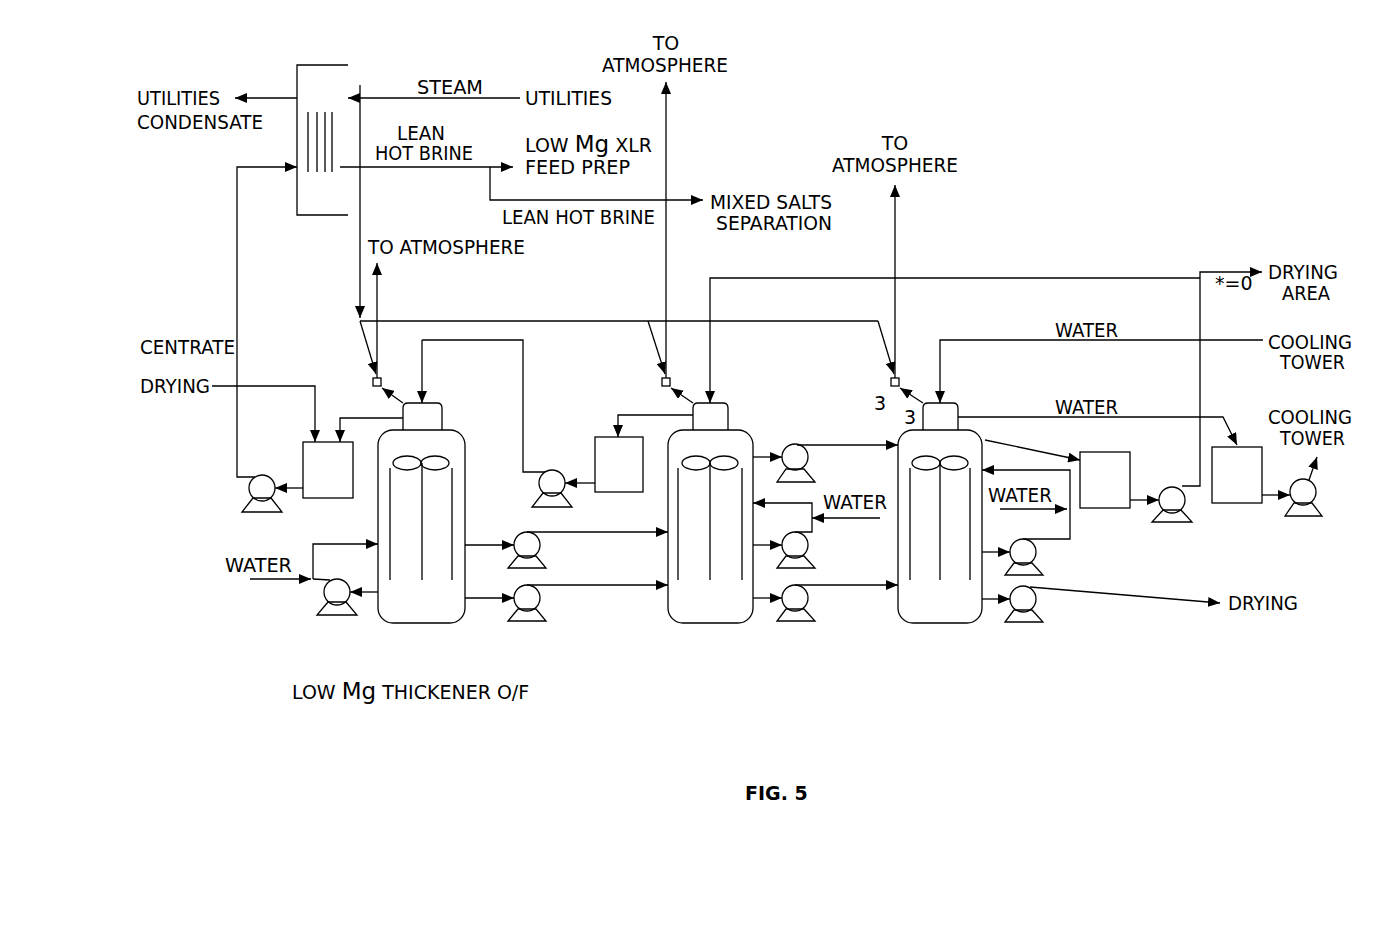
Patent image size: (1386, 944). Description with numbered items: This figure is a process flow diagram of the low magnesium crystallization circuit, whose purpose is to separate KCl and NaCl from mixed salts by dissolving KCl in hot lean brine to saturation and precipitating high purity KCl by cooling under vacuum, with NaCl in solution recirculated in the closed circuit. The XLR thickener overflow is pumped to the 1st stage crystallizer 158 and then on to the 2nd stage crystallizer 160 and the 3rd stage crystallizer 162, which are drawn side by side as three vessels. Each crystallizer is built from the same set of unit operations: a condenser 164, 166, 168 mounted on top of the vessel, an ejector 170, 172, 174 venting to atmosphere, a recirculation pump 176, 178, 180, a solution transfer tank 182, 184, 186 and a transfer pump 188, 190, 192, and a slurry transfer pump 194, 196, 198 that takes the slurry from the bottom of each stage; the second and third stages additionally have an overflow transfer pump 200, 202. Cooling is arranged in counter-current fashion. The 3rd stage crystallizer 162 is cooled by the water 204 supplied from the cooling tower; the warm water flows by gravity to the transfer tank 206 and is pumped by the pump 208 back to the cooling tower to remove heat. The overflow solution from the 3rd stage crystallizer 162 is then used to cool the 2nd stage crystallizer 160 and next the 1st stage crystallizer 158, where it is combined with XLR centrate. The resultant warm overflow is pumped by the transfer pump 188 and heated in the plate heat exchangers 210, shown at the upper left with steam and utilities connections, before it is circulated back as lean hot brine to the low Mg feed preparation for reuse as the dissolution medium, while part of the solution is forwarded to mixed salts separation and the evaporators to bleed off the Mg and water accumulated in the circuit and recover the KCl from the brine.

The 1st stage crystallizer 158 is at (404, 618).
The 2nd stage crystallizer 160 is at (693, 618).
The 3rd stage crystallizer 162 is at (922, 618).
The condenser 164 is at (428, 418).
The condenser 166 is at (722, 417).
The condenser 168 is at (950, 418).
The ejector 170 is at (372, 380).
The ejector 172 is at (661, 378).
The ejector 174 is at (890, 378).
The recirculation pump 176 is at (323, 582).
The recirculation pump 178 is at (808, 548).
The recirculation pump 180 is at (1037, 553).
The solution transfer tank 182 is at (310, 481).
The solution transfer tank 184 is at (601, 476).
The solution transfer tank 186 is at (1087, 491).
The transfer pump 188 is at (250, 490).
The transfer pump 190 is at (553, 478).
The transfer pump 192 is at (1168, 492).
The slurry transfer pump 194 is at (540, 600).
The slurry transfer pump 196 is at (808, 600).
The slurry transfer pump 198 is at (1037, 600).
The overflow transfer pump 200 is at (540, 548).
The overflow transfer pump 202 is at (796, 450).
The water 204 is at (1132, 340).
The transfer tank 206 is at (1219, 486).
The pump 208 is at (1303, 505).
The plate heat exchangers 210 is at (328, 122).